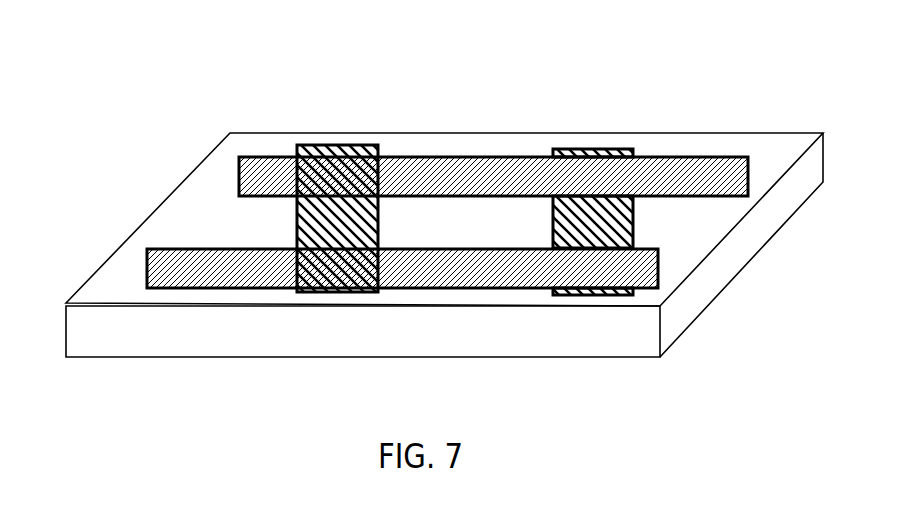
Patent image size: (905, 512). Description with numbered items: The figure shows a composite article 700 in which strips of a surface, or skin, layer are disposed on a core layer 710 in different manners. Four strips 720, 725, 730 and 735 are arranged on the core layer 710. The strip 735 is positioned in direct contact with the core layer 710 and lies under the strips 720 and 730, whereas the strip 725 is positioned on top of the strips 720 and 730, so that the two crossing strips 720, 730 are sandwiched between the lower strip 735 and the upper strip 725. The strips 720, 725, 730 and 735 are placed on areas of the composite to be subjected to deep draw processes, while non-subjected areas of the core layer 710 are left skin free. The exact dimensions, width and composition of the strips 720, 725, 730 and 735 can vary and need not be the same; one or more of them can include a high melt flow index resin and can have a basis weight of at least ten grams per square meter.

The composite article 700 is at (143, 69).
The core layer 710 is at (712, 290).
The strip 720 is at (227, 280).
The strip 725 is at (315, 155).
The strip 730 is at (432, 157).
The strip 735 is at (595, 157).